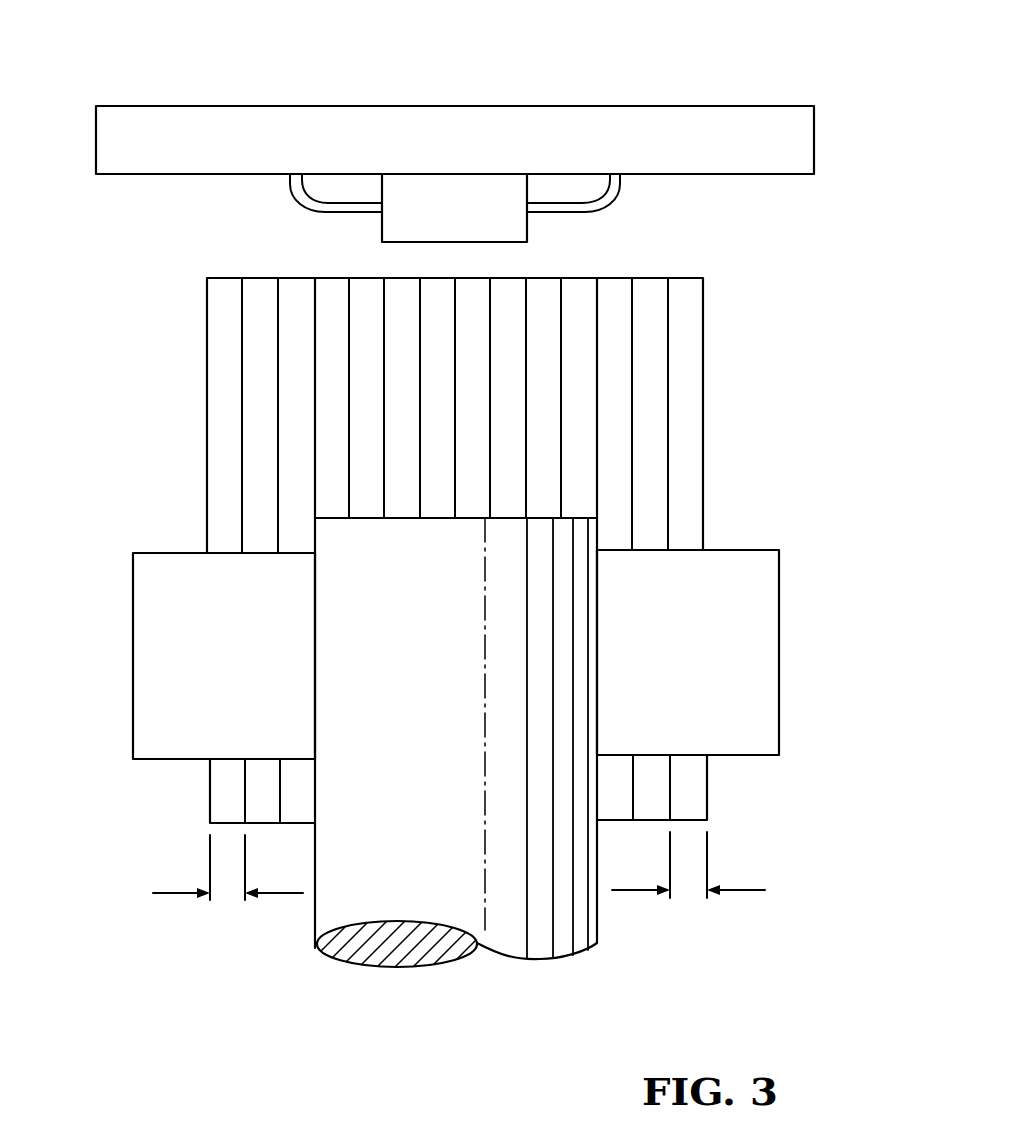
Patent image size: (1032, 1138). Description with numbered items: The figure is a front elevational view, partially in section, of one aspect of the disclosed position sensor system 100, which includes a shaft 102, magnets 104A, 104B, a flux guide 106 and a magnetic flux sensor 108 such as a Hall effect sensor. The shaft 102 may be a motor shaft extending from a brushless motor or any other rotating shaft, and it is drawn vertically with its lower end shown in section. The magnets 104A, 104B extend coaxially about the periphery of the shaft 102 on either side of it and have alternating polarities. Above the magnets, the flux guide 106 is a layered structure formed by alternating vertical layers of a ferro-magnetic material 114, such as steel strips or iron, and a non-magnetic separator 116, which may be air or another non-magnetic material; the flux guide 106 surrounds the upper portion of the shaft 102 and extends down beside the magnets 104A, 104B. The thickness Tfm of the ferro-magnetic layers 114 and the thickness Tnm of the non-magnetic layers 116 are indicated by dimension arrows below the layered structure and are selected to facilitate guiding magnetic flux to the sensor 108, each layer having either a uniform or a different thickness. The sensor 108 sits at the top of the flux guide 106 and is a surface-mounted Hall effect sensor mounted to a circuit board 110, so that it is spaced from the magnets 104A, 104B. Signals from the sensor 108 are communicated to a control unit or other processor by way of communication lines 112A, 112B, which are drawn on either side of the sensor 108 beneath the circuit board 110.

The position sensor system 100 is at (812, 329).
The shaft 102 is at (375, 903).
The magnet 104A is at (140, 613).
The magnet 104B is at (772, 610).
The flux guide 106 is at (698, 475).
The magnetic flux sensor 108 is at (508, 195).
The circuit board 110 is at (797, 110).
The communication line 112A is at (345, 205).
The communication line 112B is at (543, 285).
The ferro-magnetic material 114 is at (227, 287).
The non-magnetic separator 116 is at (255, 287).
The thickness of the ferro-magnetic layers Tfm is at (230, 892).
The thickness of the non-magnetic layers Tnm is at (688, 888).